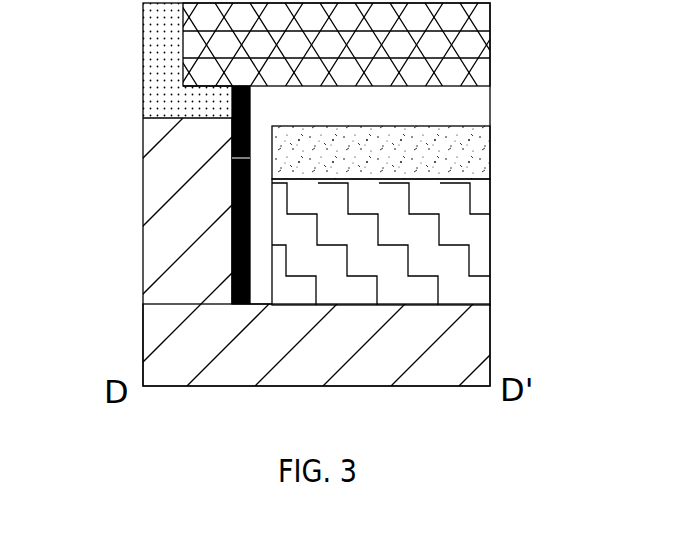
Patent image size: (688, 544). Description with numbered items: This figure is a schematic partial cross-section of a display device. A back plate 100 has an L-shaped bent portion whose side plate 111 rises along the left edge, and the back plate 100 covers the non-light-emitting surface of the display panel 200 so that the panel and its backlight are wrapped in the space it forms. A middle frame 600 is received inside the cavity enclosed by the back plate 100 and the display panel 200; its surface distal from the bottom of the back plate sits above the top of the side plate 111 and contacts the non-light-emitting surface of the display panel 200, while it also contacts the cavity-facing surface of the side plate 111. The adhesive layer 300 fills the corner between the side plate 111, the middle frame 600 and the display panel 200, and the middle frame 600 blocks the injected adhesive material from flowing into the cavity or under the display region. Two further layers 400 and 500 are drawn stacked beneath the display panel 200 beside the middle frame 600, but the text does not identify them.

The back plate 100 is at (475, 354).
The side plate 111 is at (162, 218).
The display panel 200 is at (488, 44).
The adhesive layer 300 is at (160, 72).
The electrode layer 400 is at (480, 172).
The stepped structure layer 500 is at (478, 255).
The middle frame 600 is at (250, 100).